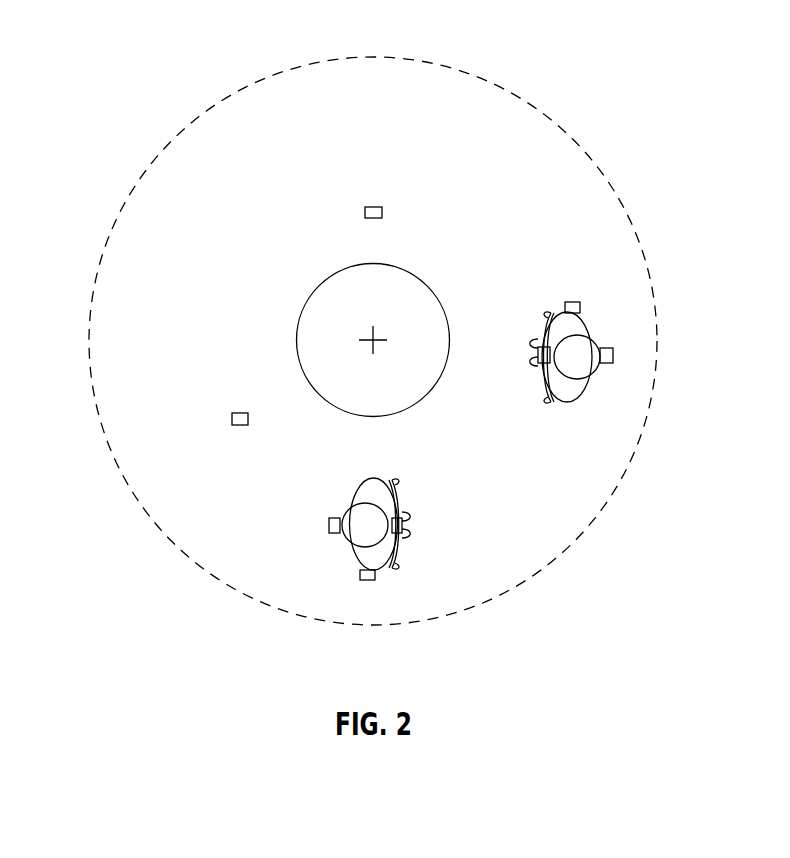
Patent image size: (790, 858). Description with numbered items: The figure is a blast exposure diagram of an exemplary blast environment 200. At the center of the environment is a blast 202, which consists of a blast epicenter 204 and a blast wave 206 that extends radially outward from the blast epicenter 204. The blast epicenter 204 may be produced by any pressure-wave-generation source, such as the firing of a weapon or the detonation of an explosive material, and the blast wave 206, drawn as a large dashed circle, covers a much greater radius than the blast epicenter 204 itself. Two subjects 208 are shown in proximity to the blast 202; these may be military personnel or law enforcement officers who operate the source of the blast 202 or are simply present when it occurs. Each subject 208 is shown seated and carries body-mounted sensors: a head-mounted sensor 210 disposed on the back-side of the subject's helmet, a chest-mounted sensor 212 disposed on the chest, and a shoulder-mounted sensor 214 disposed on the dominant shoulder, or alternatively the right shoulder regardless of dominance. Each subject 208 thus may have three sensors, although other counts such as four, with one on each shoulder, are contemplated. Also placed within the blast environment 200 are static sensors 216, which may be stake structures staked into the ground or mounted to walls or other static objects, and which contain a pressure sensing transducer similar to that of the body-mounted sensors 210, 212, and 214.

The blast environment 200 is at (126, 40).
The blast 202 is at (99, 228).
The blast epicenter 204 is at (417, 275).
The blast wave 206 is at (533, 572).
The subject 208 is at (578, 401).
The head-mounted sensor 210 is at (613, 355).
The chest-mounted sensor 212 is at (538, 352).
The shoulder-mounted sensor 214 is at (572, 301).
The static sensor 216 is at (372, 207).